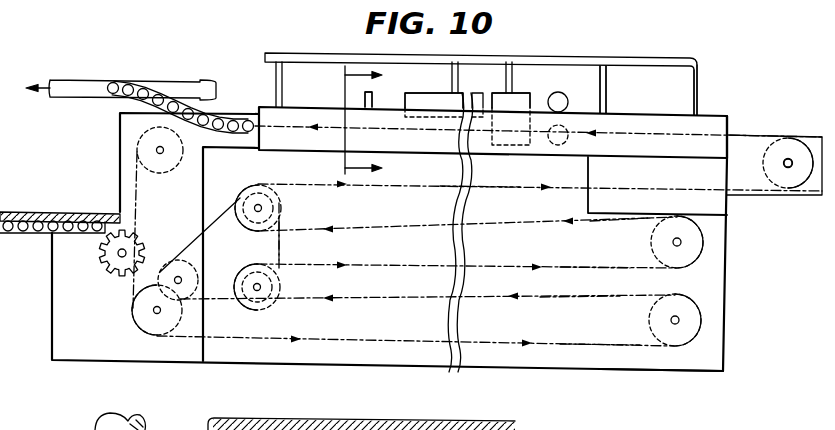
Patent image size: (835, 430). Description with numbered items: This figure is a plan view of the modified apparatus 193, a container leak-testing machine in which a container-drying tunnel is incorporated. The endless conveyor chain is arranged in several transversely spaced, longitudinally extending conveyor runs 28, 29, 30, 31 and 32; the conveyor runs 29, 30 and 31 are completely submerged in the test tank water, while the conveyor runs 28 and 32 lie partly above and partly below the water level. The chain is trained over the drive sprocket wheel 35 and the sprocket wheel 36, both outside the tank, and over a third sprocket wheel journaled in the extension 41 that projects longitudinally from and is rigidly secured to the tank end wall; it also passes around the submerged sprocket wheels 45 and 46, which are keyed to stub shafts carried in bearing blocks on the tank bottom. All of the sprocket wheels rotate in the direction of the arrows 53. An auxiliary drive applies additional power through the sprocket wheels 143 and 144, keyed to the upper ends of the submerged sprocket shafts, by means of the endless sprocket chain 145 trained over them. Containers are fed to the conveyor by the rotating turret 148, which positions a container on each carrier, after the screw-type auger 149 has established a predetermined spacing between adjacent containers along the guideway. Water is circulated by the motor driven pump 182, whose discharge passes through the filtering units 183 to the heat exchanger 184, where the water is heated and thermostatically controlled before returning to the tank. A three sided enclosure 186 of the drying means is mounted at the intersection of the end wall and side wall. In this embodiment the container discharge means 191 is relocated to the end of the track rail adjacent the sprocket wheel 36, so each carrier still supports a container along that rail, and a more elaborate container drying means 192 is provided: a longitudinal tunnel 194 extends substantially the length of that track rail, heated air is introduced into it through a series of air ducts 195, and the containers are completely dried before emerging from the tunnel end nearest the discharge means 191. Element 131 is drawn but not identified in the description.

The feed arm 131 is at (78, 79).
The container discharge means 191 is at (128, 103).
The longitudinal tunnel 194 is at (270, 115).
The sprocket wheel 36 is at (165, 166).
The screw-type auger 149 is at (90, 212).
The sprocket wheel 144 is at (250, 202).
The endless sprocket chain 145 is at (281, 248).
The sprocket wheel 143 is at (250, 297).
The rotating turret 148 is at (101, 278).
The drive sprocket wheel 35 is at (146, 318).
The motor driven pump 182 is at (528, 92).
The heat exchanger 184 is at (437, 103).
The filtering units 183 is at (560, 93).
The air ducts 195 is at (606, 90).
The container drying means 192 is at (742, 112).
The extension 41 is at (783, 133).
The arrows 53 is at (793, 180).
The conveyor run 32 is at (513, 188).
The three sided enclosure 186 is at (600, 197).
The conveyor run 31 is at (605, 219).
The sprocket wheel 46 is at (690, 250).
The conveyor run 30 is at (590, 269).
The conveyor run 29 is at (567, 298).
The sprocket wheel 45 is at (687, 323).
The conveyor run 28 is at (603, 348).
The modified apparatus 193 is at (708, 378).